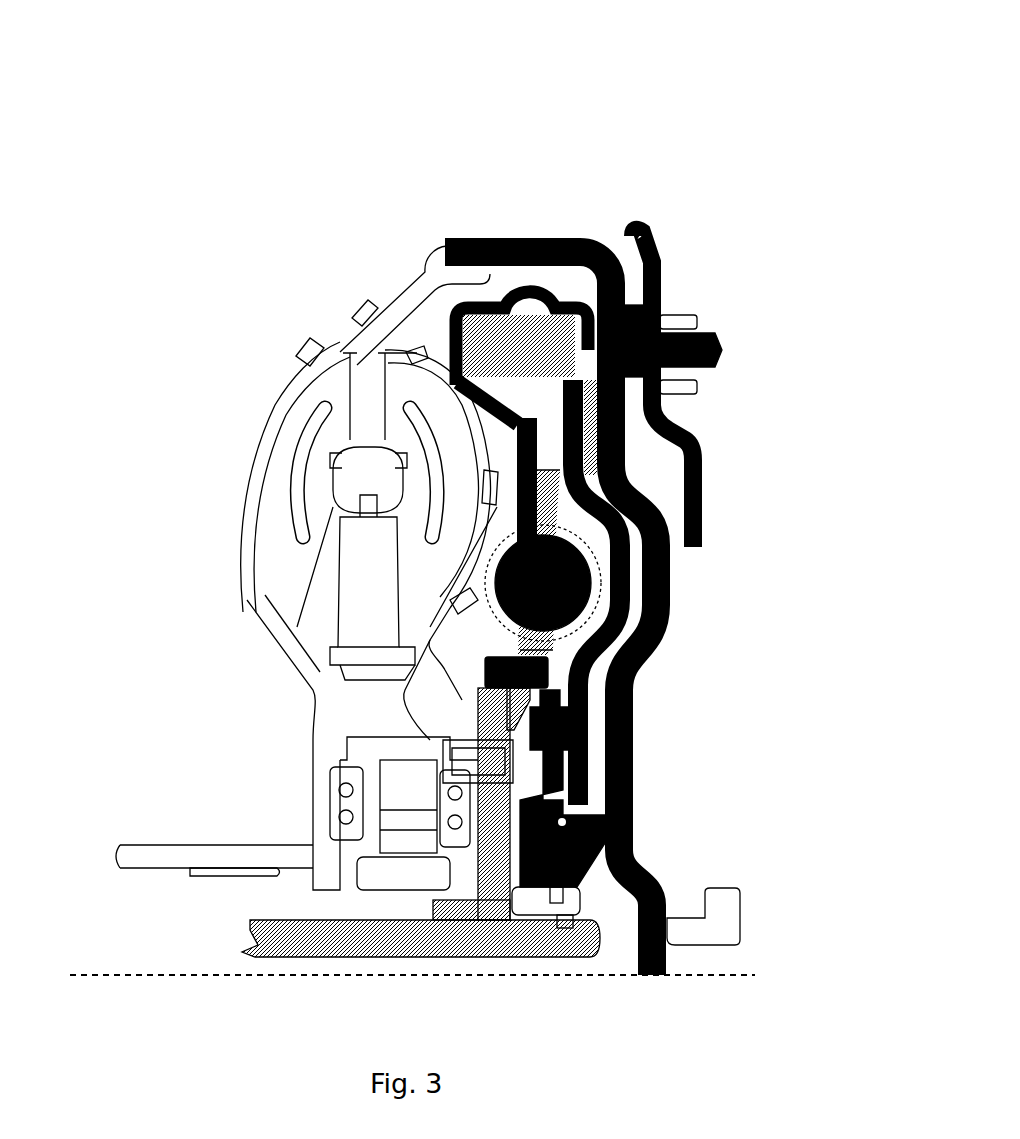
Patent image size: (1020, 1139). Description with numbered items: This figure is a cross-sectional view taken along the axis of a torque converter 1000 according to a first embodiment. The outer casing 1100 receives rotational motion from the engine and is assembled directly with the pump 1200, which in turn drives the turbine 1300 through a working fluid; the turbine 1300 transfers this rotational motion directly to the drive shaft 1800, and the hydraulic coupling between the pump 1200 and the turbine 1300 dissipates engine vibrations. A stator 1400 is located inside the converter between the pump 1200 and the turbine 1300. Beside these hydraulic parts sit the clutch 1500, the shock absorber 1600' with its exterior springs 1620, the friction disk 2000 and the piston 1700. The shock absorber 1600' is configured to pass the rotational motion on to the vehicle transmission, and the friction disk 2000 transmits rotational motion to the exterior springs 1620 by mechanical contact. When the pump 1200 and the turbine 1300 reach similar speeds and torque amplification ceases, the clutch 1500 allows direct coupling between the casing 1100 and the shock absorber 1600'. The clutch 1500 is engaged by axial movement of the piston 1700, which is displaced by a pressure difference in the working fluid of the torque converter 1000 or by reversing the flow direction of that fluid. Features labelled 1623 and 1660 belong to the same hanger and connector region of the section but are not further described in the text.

The torque converter 1000 is at (430, 88).
The casing 1100 is at (537, 236).
The pump 1200 is at (268, 442).
The turbine 1300 is at (383, 395).
The stator 1400 is at (350, 565).
The clutch 1500 is at (587, 404).
The shock absorber 1600' is at (398, 277).
The exterior springs 1620 is at (530, 298).
The roller 1623 is at (590, 578).
The connector block 1660 is at (510, 823).
The piston 1700 is at (612, 665).
The drive shaft 1800 is at (230, 935).
The friction disk 2000 is at (563, 327).